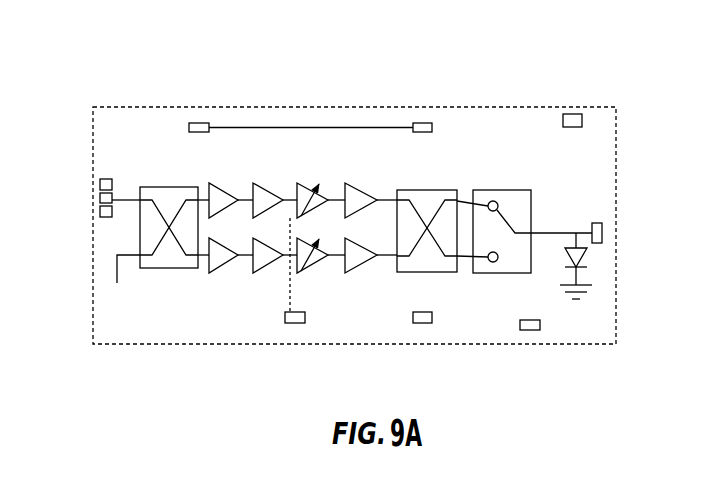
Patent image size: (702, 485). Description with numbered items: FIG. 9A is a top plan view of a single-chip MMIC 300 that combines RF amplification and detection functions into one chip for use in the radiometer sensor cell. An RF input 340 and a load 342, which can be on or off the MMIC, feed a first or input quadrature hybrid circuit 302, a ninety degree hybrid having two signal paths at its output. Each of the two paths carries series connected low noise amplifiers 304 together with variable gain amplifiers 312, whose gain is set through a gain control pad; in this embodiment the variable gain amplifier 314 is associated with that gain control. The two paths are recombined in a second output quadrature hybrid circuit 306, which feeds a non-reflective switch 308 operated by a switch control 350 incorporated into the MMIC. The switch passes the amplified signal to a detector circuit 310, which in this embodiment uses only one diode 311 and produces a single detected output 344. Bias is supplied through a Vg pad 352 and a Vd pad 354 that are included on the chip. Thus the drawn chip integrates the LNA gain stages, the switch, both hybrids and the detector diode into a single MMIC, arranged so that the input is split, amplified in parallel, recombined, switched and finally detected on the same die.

The MMIC chip 300 is at (336, 100).
The input quadrature hybrid circuit 302 is at (158, 268).
The low noise amplifiers 304 is at (228, 196).
The output quadrature hybrid circuit 306 is at (450, 273).
The non-reflective switch 308 is at (520, 200).
The detector circuit 310 is at (597, 260).
The diode 311 is at (578, 246).
The variable gain amplifiers 312 is at (307, 273).
The variable gain amplifier 314 is at (286, 323).
The RF input 340 is at (100, 199).
The load 342 is at (116, 285).
The detected output 344 is at (602, 240).
The switch control 350 is at (577, 118).
The Vg pad 352 is at (203, 124).
The Vd pad 354 is at (422, 323).